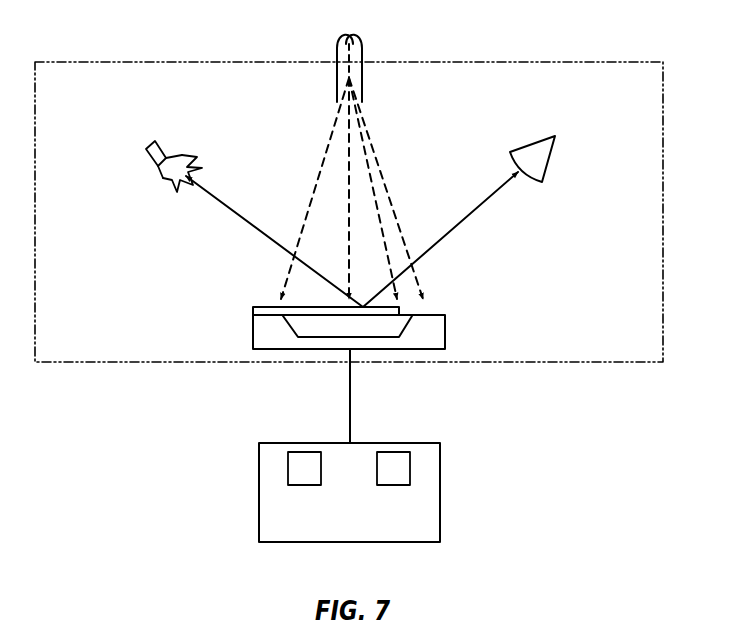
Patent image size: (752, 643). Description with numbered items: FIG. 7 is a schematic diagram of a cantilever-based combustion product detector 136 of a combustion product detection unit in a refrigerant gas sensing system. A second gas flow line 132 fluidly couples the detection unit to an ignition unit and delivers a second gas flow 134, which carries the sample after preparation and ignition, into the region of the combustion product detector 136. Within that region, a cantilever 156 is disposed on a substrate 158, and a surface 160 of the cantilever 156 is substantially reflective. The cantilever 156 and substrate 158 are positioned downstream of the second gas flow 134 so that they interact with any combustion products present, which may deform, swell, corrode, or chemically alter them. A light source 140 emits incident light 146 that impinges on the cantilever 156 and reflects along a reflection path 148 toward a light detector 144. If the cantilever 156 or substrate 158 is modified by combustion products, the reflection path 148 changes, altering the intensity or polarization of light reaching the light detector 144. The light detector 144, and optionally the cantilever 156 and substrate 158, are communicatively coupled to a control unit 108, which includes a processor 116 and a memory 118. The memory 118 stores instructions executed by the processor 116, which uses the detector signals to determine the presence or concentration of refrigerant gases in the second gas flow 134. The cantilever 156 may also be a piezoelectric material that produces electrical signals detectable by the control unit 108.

The control unit 108 is at (441, 489).
The processor 116 is at (303, 452).
The memory 118 is at (393, 452).
The second gas flow line 132 is at (362, 48).
The second gas flow 134 is at (348, 78).
The combustion product detector 136 is at (665, 207).
The light source 140 is at (168, 146).
The light detector 144 is at (545, 170).
The incident light 146 is at (228, 207).
The reflection path 148 is at (459, 219).
The cantilever 156 is at (410, 315).
The substrate 158 is at (446, 320).
The surface 160 is at (267, 307).